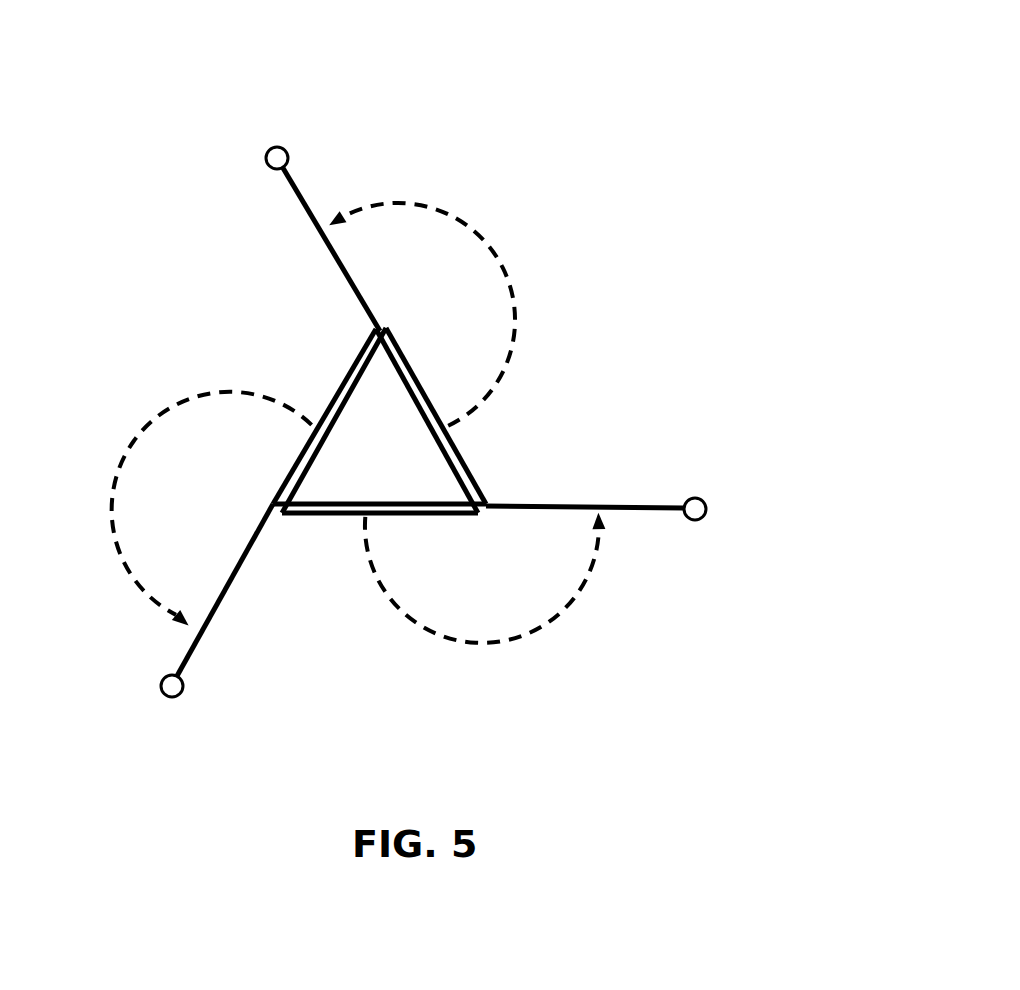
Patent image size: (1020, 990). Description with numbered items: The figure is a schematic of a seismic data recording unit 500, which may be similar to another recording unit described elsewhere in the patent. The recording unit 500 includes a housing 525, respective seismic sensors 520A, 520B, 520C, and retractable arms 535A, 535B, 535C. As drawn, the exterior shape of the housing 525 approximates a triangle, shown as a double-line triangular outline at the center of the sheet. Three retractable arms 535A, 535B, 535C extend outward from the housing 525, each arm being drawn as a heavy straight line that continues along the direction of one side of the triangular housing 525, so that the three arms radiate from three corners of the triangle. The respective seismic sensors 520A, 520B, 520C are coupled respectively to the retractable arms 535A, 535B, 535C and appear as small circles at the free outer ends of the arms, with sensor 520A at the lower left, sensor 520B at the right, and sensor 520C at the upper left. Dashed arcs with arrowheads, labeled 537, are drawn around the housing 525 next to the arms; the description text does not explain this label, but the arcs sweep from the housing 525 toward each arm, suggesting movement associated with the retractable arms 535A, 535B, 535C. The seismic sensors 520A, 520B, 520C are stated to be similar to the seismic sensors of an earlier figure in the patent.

The seismic data recording unit 500 is at (154, 74).
The housing 525 is at (340, 388).
The retractable arm 535A is at (250, 562).
The retractable arm 535B is at (557, 505).
The retractable arm 535C is at (343, 272).
The seismic sensor 520A is at (172, 700).
The seismic sensor 520B is at (708, 505).
The seismic sensor 520C is at (268, 146).
The rotation direction indicators 537 is at (500, 258).